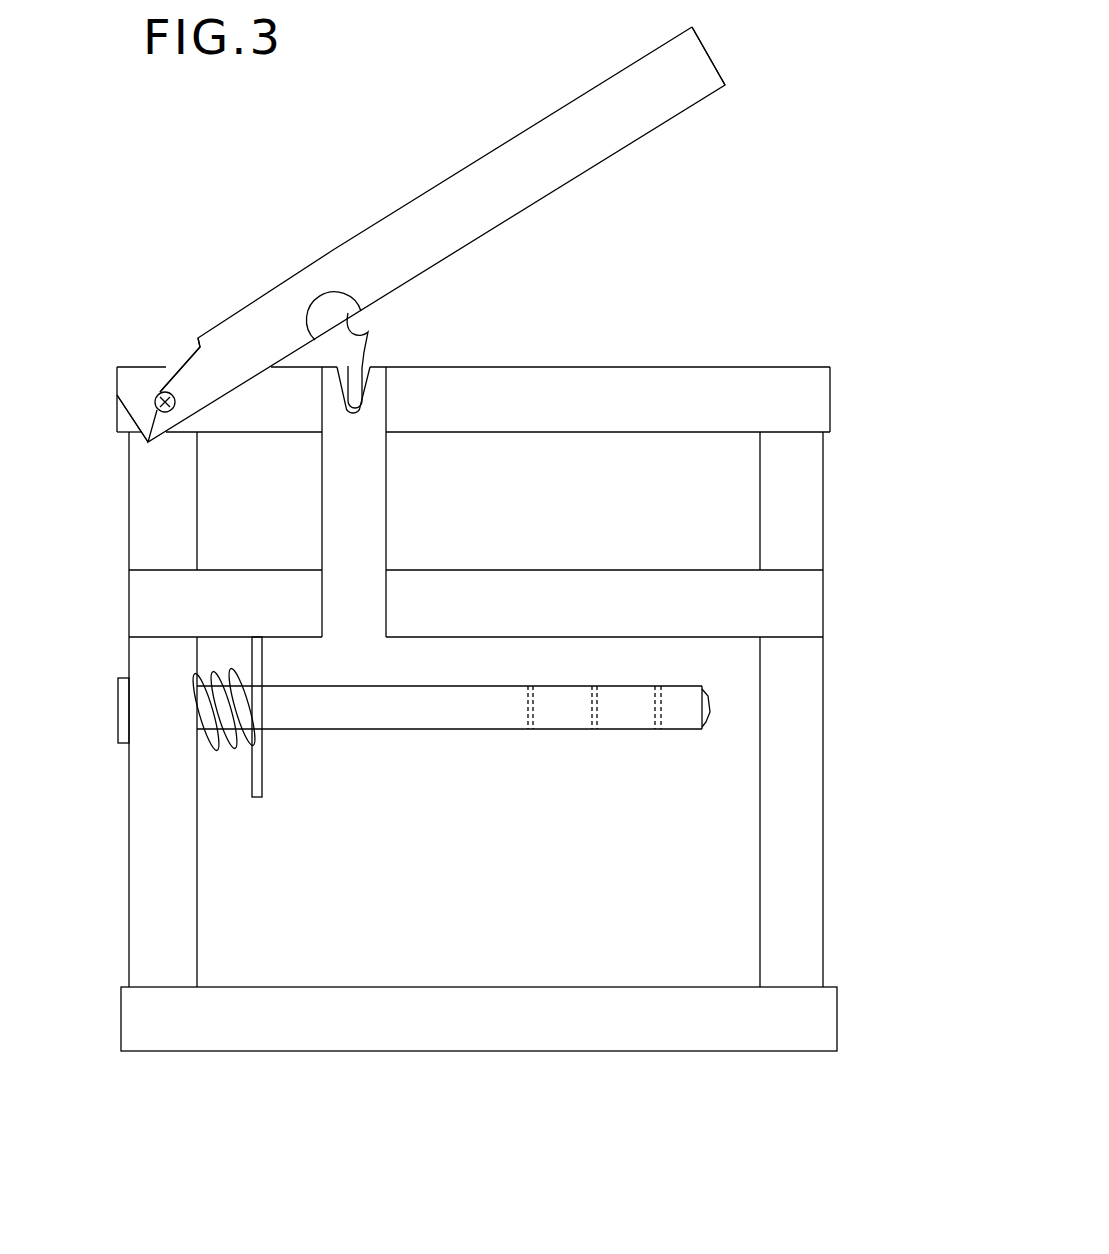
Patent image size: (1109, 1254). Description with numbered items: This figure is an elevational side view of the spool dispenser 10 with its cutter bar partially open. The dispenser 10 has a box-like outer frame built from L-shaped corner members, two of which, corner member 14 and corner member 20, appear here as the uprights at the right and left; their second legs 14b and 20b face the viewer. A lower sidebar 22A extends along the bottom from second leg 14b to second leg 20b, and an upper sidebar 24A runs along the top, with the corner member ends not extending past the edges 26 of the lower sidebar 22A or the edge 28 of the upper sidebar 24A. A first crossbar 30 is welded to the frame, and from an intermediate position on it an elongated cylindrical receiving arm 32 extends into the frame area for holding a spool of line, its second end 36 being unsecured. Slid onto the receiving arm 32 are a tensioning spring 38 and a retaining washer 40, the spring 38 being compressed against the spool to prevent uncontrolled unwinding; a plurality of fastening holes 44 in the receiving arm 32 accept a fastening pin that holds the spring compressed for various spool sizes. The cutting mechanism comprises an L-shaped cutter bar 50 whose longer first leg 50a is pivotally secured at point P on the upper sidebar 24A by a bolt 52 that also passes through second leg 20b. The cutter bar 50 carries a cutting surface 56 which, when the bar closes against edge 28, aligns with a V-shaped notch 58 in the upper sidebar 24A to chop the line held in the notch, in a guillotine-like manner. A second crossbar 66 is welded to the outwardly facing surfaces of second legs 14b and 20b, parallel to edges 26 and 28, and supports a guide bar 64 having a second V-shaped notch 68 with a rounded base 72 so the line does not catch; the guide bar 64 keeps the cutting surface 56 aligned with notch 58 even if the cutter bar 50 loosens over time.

The spool dispenser 10 is at (229, 163).
The corner member 14 is at (840, 763).
The second leg 14b is at (803, 852).
The corner member 20 is at (118, 820).
The second leg 20b is at (143, 855).
The lower sidebar 22A is at (425, 1030).
The upper sidebar 24A is at (553, 398).
The edges 26 is at (166, 1056).
The edge 28 is at (743, 360).
The first crossbar 30 is at (120, 688).
The receiving arm 32 is at (430, 713).
The second end 36 is at (712, 730).
The tensioning spring 38 is at (225, 758).
The retaining washer 40 is at (266, 776).
The fastening holes 44 is at (653, 731).
The cutter bar 50 is at (505, 136).
The first leg 50a is at (700, 73).
The bolt 52 is at (157, 392).
The cutting surface 56 is at (368, 332).
The V-shaped notch 58 is at (363, 361).
The guide bar 64 is at (365, 517).
The second crossbar 66 is at (540, 590).
The second V-shaped notch 68 is at (345, 392).
The rounded base 72 is at (355, 416).
The pivot point P is at (150, 402).